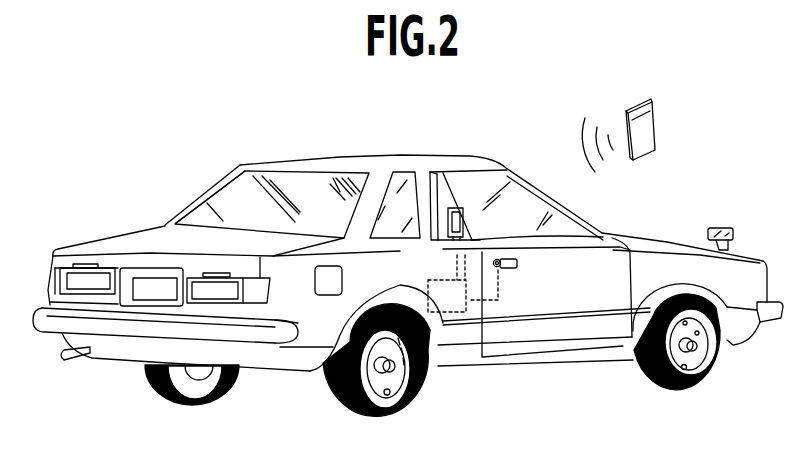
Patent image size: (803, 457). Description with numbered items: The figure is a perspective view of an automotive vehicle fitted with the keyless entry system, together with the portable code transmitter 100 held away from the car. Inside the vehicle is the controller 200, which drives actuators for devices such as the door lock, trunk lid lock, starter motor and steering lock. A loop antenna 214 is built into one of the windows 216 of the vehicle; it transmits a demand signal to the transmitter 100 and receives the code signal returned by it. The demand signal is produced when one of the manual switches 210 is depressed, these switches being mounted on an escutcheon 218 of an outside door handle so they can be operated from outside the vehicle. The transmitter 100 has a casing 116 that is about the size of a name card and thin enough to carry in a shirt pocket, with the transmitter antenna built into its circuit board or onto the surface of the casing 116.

The code transmitter 100 is at (657, 129).
The transmitter casing 116 is at (648, 118).
The controller 200 is at (437, 282).
The manual switches 210 is at (497, 259).
The loop antenna 214 is at (460, 212).
The window 216 is at (443, 176).
The escutcheon 218 is at (512, 268).